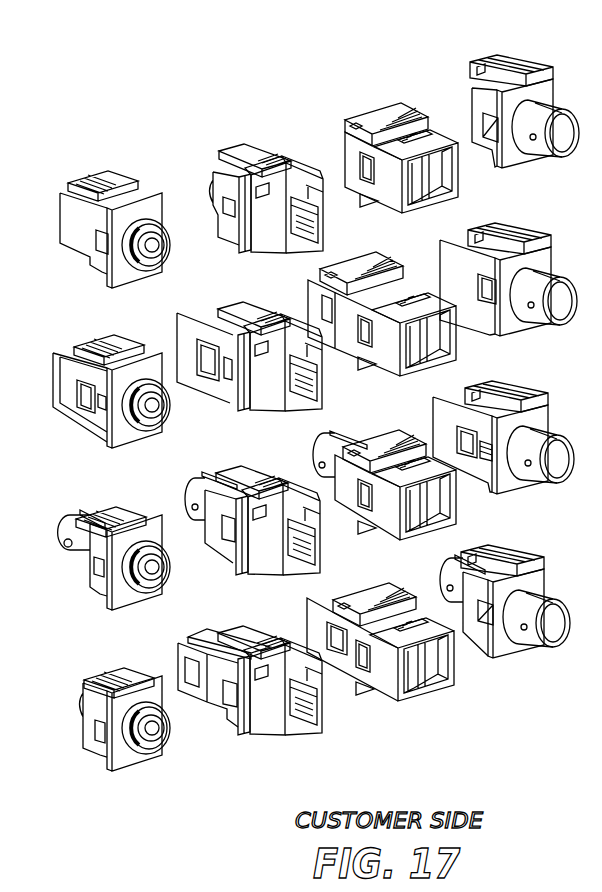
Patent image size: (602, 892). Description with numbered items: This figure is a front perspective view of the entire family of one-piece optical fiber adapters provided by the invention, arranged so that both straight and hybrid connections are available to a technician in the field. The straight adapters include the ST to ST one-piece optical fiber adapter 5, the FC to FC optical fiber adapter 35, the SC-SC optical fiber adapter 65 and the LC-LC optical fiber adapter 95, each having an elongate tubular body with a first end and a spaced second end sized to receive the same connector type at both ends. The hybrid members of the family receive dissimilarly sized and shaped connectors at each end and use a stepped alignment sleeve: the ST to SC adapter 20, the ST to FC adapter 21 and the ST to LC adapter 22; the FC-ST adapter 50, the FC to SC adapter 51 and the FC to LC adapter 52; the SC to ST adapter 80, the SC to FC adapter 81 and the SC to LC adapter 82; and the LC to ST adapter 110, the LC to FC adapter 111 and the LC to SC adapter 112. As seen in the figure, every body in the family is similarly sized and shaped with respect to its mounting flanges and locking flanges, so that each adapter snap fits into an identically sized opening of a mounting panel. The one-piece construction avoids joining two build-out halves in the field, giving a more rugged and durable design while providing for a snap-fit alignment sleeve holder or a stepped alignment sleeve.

The one-piece optical fiber adapter 5 is at (512, 638).
The one-piece ST to SC tubular optical fiber adapter 20 is at (512, 473).
The one-piece ST to FC optical fiber adapter 21 is at (520, 158).
The one-piece ST to LC optical fiber adapter 22 is at (520, 318).
The one-piece tubular FC to FC optical fiber adapter 35 is at (128, 760).
The one-piece FC-ST optical fiber adapter 50 is at (128, 595).
The one-piece optical fiber adapter for an FC to SC connection 51 is at (127, 437).
The one-piece optical fiber adapter for an FC to LC connection 52 is at (127, 272).
The one-piece SC-SC optical fiber adapter 65 is at (387, 677).
The one-piece SC to ST optical fiber adapter 80 is at (372, 438).
The one-piece SC to FC optical fiber adapter 81 is at (427, 135).
The one-piece SC to LC optical fiber adapter 82 is at (353, 265).
The one-piece LC-LC optical fiber adapter 95 is at (267, 708).
The one-piece adapter 110 is at (247, 478).
The one-piece optical fiber adapter 111 is at (277, 165).
The one-piece optical fiber adapter 112 is at (223, 308).